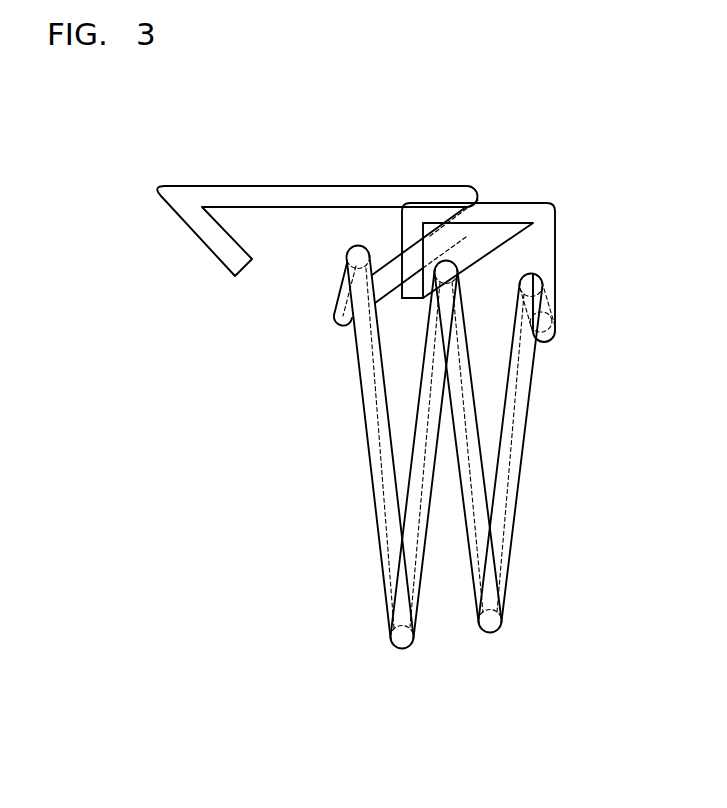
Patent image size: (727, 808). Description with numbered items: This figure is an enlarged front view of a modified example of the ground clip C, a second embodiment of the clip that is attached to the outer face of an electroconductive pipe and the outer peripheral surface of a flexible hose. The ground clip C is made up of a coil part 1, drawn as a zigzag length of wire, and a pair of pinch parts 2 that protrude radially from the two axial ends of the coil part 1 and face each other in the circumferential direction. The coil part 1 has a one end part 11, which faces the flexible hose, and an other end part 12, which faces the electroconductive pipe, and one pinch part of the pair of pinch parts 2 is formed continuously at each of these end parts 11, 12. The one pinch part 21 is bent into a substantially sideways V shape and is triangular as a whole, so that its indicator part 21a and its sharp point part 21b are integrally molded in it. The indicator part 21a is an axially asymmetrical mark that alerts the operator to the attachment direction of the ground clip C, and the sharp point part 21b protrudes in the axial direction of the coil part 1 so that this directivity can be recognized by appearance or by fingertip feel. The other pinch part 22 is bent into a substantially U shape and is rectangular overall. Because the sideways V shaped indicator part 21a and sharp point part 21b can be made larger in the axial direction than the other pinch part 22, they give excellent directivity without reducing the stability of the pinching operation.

The coil part 1 is at (472, 558).
The pinch parts 2 is at (389, 207).
The one pinch part 21 is at (238, 185).
The other pinch part 22 is at (522, 215).
The indicator part 21a is at (468, 196).
The sharp point part 21b is at (427, 217).
The one end part 11 is at (342, 322).
The other end part 12 is at (556, 341).
The ground clip C is at (303, 140).